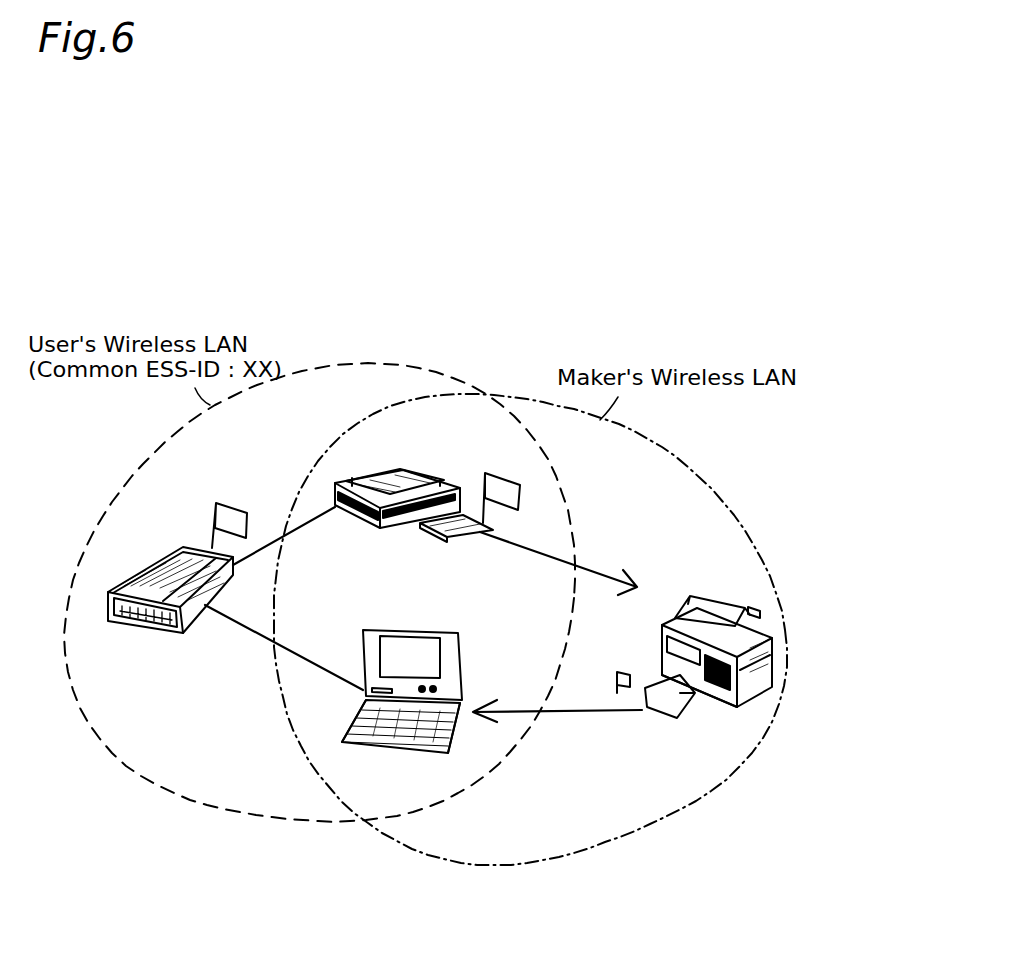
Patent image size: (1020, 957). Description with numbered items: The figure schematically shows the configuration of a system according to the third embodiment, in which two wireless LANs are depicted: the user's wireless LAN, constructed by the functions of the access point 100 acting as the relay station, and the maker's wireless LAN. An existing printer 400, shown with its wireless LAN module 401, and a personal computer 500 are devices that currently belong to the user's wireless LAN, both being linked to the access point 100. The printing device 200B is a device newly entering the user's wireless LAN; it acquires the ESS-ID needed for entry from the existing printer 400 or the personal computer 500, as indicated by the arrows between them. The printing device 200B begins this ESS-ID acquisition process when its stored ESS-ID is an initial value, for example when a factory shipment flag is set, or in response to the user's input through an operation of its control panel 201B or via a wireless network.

The access point 100 is at (163, 633).
The existing printer 400 is at (433, 482).
The wireless LAN card of printer 400 401 is at (353, 482).
The personal computer 500 is at (428, 628).
The printing device 200B is at (662, 648).
The control panel 201B is at (755, 609).